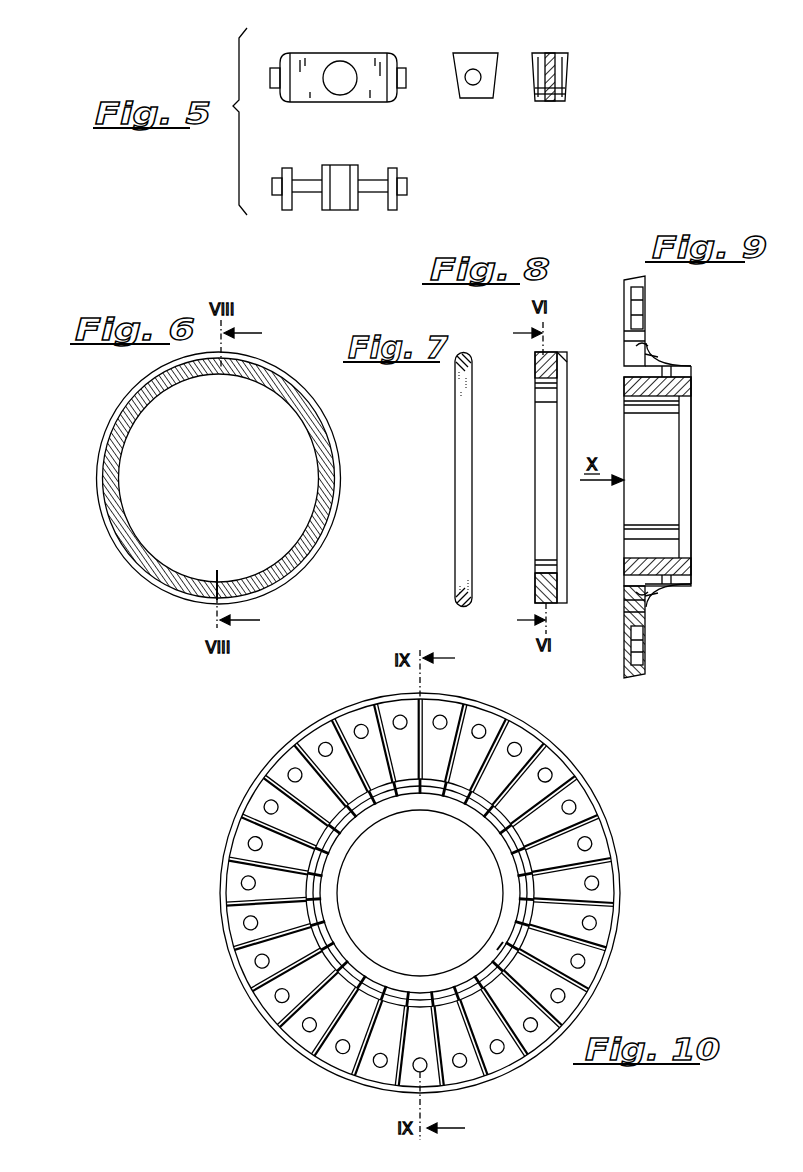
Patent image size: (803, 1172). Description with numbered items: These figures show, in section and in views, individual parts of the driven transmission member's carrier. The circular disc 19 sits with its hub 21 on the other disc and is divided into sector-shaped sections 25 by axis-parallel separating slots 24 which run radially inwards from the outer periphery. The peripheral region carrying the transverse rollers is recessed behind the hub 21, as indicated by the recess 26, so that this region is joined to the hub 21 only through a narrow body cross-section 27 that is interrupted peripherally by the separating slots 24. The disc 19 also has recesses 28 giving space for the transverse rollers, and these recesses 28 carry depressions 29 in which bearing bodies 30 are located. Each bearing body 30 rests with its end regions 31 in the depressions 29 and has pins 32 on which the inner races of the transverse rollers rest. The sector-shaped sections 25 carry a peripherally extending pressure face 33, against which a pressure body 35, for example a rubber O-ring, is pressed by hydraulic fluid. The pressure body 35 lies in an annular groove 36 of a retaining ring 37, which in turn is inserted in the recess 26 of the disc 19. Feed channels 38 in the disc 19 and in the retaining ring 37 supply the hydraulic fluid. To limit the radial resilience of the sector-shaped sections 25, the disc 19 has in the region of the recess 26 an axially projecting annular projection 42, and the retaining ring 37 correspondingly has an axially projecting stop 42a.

In FIG. 9, the circular disc 19 is at (700, 500).
In FIG. 10, the circular disc 19 is at (627, 858).
In FIG. 9, the hub 21 is at (683, 405).
In FIG. 10, the hub 21 is at (496, 842).
In FIG. 9, the separating slots 24 is at (630, 293).
In FIG. 10, the separating slots 24 is at (587, 967).
In FIG. 9, the sector-shaped sections 25 is at (641, 680).
In FIG. 10, the sector-shaped sections 25 is at (600, 910).
In FIG. 9, the recess 26 is at (673, 386).
In FIG. 10, the recess 26 is at (330, 840).
In FIG. 9, the narrow body cross-section 27 is at (683, 373).
In FIG. 10, the narrow body cross-section 27 is at (407, 785).
In FIG. 9, the recesses 28 is at (668, 356).
In FIG. 9, the depressions 29 is at (639, 308).
In FIG. 5, the bearing body 30 is at (349, 44).
In FIG. 5, the end regions 31 is at (285, 170).
In FIG. 5, the pins 32 is at (338, 84).
In FIG. 9, the pressure face 33 is at (650, 346).
In FIG. 10, the pressure face 33 is at (500, 953).
In FIG. 7, the pressure body 35 is at (463, 422).
In FIG. 6, the annular groove 36 is at (138, 390).
In FIG. 8, the annular groove 36 is at (556, 593).
In FIG. 6, the retaining ring 37 is at (142, 412).
In FIG. 8, the retaining ring 37 is at (535, 365).
In FIG. 6, the feed channels 38 is at (217, 577).
In FIG. 8, the feed channels 38 is at (537, 571).
In FIG. 9, the annular projection 42 is at (647, 362).
In FIG. 10, the annular projection 42 is at (518, 880).
In FIG. 8, the stop 42a is at (558, 353).